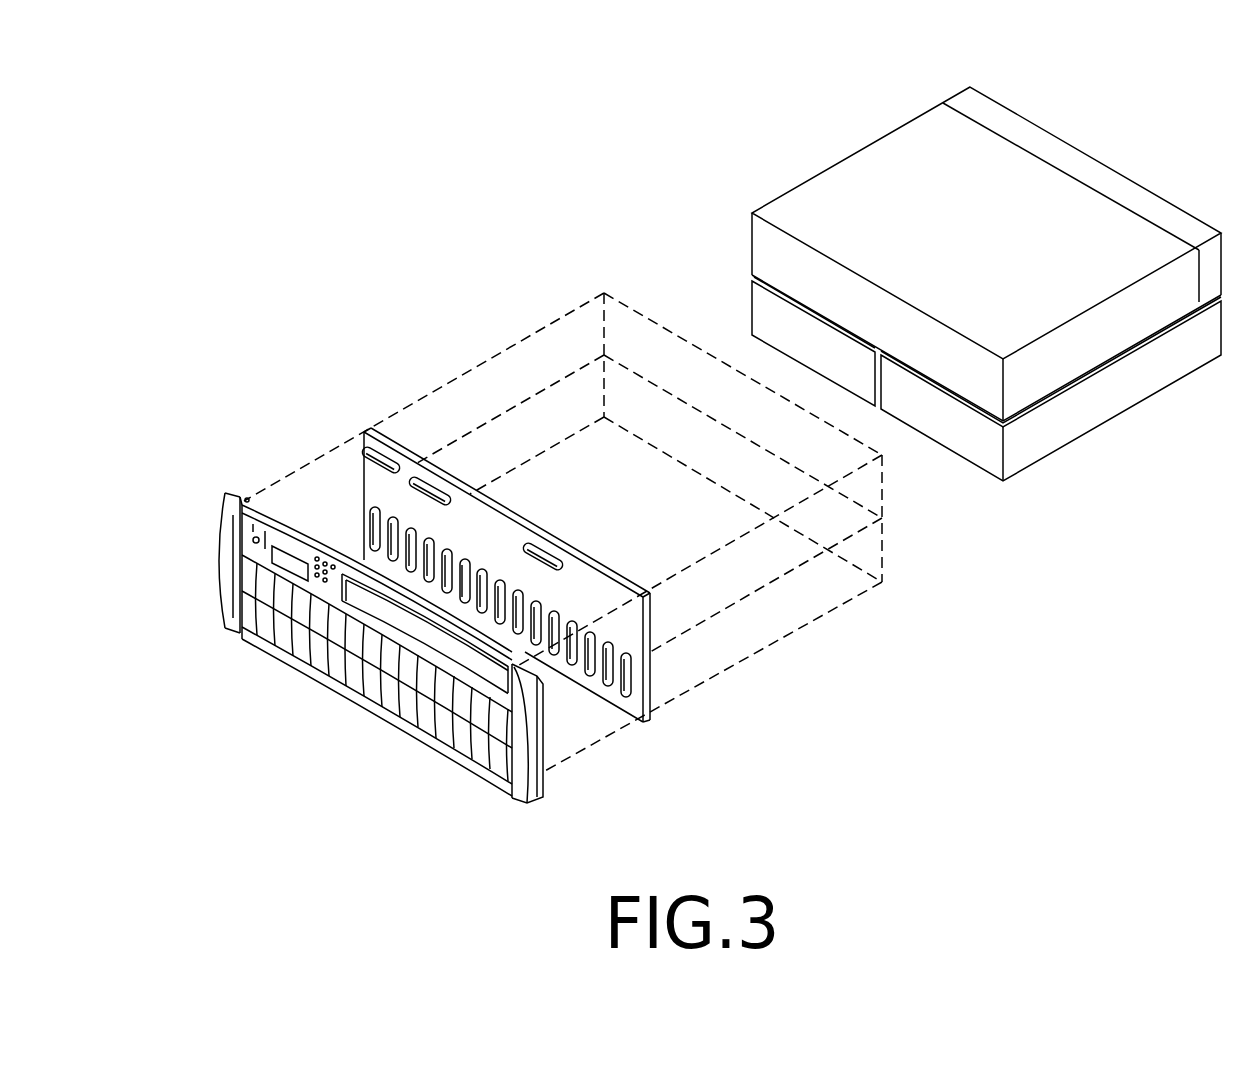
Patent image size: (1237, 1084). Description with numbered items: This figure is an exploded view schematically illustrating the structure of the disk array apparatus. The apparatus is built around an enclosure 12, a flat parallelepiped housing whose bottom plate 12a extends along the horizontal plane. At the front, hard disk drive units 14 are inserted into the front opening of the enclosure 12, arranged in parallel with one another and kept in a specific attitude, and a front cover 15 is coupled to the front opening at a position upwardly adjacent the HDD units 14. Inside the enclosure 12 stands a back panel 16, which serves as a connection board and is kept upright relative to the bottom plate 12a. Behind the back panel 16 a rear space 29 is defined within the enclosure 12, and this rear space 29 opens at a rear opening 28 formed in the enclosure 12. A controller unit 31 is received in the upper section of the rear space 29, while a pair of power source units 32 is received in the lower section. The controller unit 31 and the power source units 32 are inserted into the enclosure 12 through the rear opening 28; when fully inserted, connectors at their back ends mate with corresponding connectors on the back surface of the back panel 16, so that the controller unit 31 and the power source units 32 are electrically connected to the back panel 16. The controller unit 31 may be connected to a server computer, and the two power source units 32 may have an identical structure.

The enclosure 12 is at (322, 455).
The bottom plate 12a is at (794, 634).
The hard disk drive units 14 is at (250, 632).
The front cover 15 is at (221, 510).
The back panel 16 is at (650, 693).
The rear opening 28 is at (640, 307).
The rear space 29 is at (474, 371).
The controller unit 31 is at (751, 228).
The power source units 32 is at (751, 313).